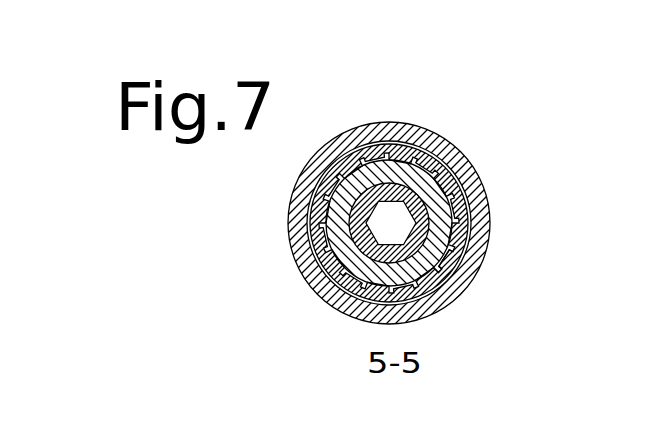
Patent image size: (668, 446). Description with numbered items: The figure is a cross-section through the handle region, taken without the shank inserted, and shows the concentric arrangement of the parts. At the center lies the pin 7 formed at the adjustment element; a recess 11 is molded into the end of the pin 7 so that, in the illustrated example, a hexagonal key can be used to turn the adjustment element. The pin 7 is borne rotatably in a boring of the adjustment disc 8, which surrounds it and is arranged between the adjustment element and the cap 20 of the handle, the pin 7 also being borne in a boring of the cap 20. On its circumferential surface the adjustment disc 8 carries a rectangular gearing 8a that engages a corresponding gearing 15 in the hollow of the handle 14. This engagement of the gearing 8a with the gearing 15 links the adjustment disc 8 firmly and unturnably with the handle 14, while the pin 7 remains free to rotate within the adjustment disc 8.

The cap 20 is at (377, 137).
The handle 14 is at (313, 219).
The adjustment disc 8 is at (443, 220).
The rectangular gearing 8a is at (465, 255).
The gearing 15 is at (558, 301).
The pin 7 is at (403, 198).
The recess 11 is at (367, 240).